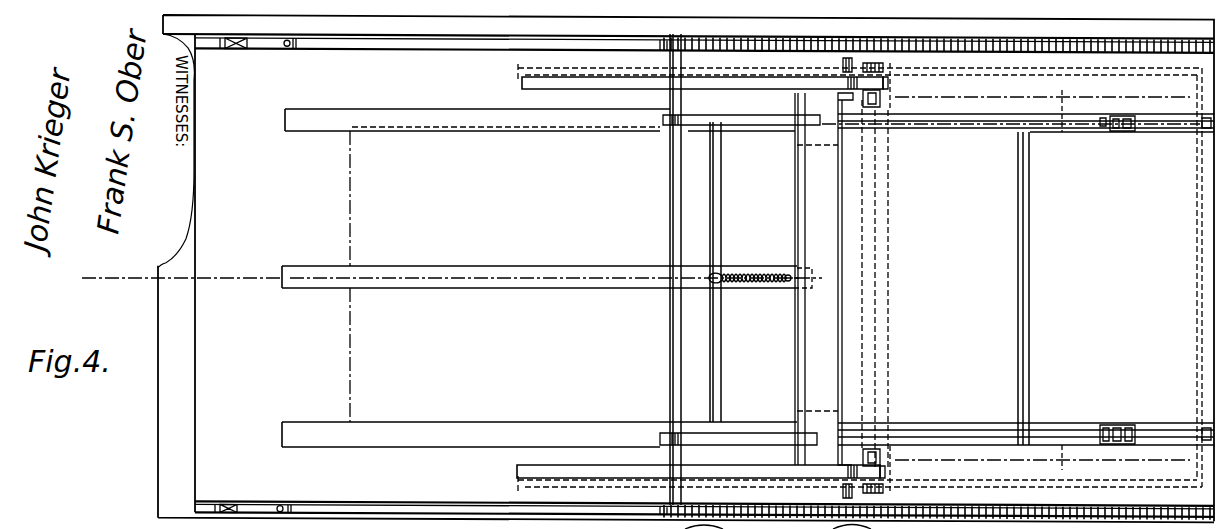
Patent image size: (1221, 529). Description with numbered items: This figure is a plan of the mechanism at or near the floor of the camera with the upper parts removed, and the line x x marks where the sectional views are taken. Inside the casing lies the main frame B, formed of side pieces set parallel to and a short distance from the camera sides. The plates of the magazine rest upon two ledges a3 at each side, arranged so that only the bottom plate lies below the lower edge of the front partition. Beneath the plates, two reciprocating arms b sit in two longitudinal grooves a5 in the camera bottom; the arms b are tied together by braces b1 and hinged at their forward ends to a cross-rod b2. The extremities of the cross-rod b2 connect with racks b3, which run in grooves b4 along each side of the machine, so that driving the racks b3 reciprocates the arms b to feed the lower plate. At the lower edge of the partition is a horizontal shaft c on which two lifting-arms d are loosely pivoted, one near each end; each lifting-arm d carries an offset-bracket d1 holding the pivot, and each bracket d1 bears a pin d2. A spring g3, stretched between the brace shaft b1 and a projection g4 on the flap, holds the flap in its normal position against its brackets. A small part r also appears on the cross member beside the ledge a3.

The ledges a3 is at (1062, 130).
The longitudinal grooves a5 is at (337, 125).
The reciprocating arms b is at (982, 118).
The braces b1 is at (1037, 316).
The cross-rod b2 is at (671, 362).
The racks b3 is at (963, 42).
The grooves b4 is at (388, 508).
The main frame B is at (518, 70).
The horizontal shaft c is at (892, 186).
The lifting-arms d is at (522, 85).
The offset-brackets d1 is at (886, 81).
The pin d2 is at (840, 59).
The spring g3 is at (736, 272).
The projection g4 is at (784, 285).
The roller r is at (1124, 145).
The section line x is at (1214, 128).